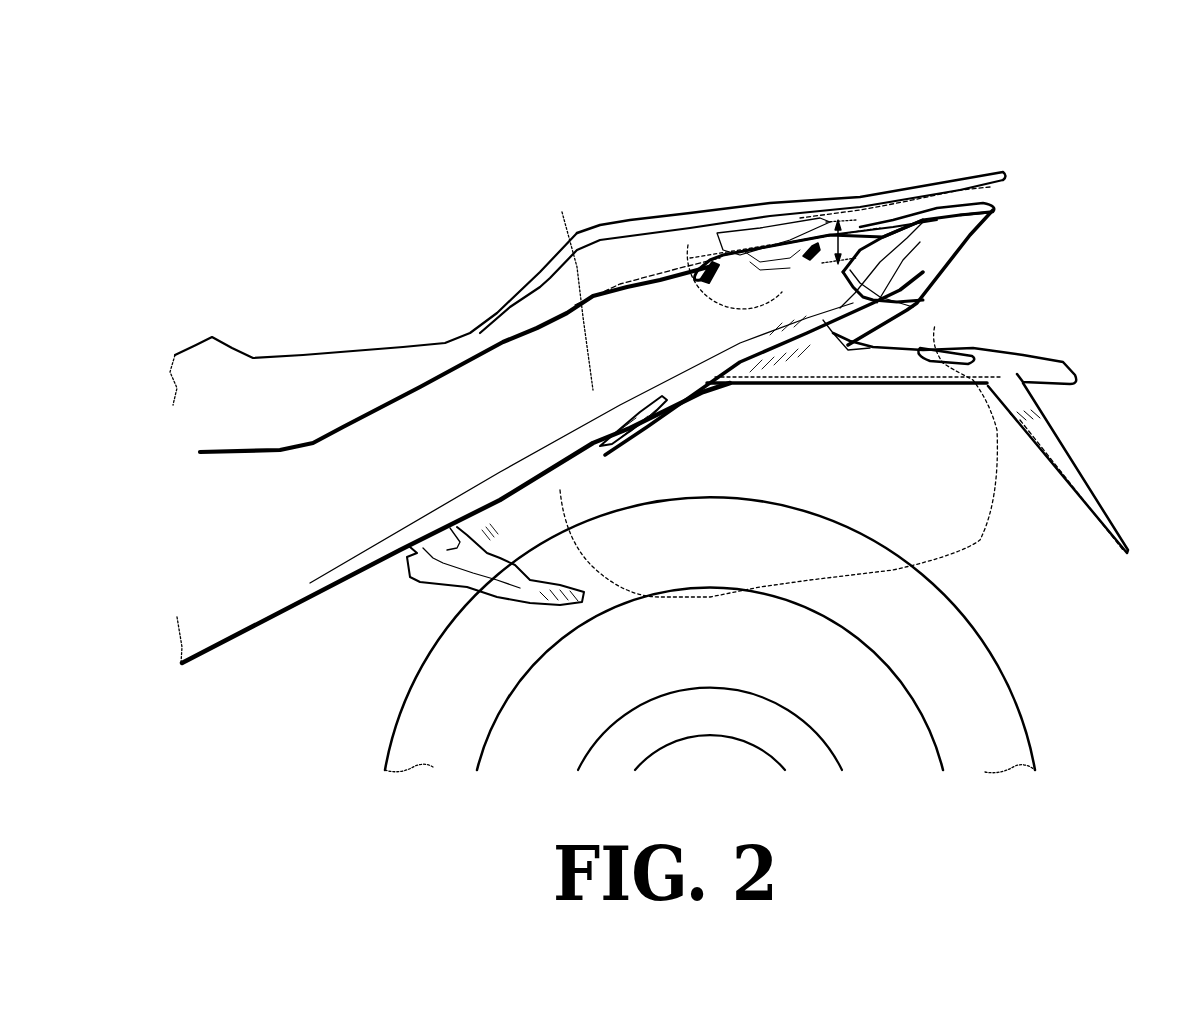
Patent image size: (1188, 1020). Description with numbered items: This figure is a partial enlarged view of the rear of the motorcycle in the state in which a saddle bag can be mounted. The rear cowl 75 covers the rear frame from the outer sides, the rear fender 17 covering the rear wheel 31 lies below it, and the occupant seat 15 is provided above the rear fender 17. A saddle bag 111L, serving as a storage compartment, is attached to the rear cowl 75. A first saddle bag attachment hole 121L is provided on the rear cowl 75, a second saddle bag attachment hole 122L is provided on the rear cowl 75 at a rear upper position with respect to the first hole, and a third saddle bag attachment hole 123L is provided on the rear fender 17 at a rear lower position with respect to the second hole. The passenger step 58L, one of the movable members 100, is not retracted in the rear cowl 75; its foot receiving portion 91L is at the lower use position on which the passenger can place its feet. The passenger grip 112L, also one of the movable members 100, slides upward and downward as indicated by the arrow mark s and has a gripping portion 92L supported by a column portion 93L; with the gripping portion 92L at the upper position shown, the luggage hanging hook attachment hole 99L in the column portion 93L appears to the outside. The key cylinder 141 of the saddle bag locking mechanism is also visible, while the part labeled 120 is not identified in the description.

The occupant seat 15 is at (333, 372).
The passenger step 58L is at (483, 527).
The movable members 100 is at (741, 256).
The rear cowl 75 is at (503, 400).
The foot receiving portion 91L is at (553, 582).
The first saddle bag attachment hole 121L is at (580, 553).
The saddle bag 111L is at (620, 282).
The second saddle bag attachment hole 122L is at (692, 262).
The luggage hanging hook attachment hole 99L is at (735, 247).
The column portion 93L is at (787, 247).
The rear cover 120 is at (798, 178).
The arrow mark s is at (837, 214).
The gripping portion 92L is at (878, 195).
The passenger grip 112L is at (920, 185).
The third saddle bag attachment hole 123L is at (927, 347).
The key cylinder 141 is at (977, 347).
The rear fender 17 is at (1063, 337).
The rear wheel 31 is at (970, 690).